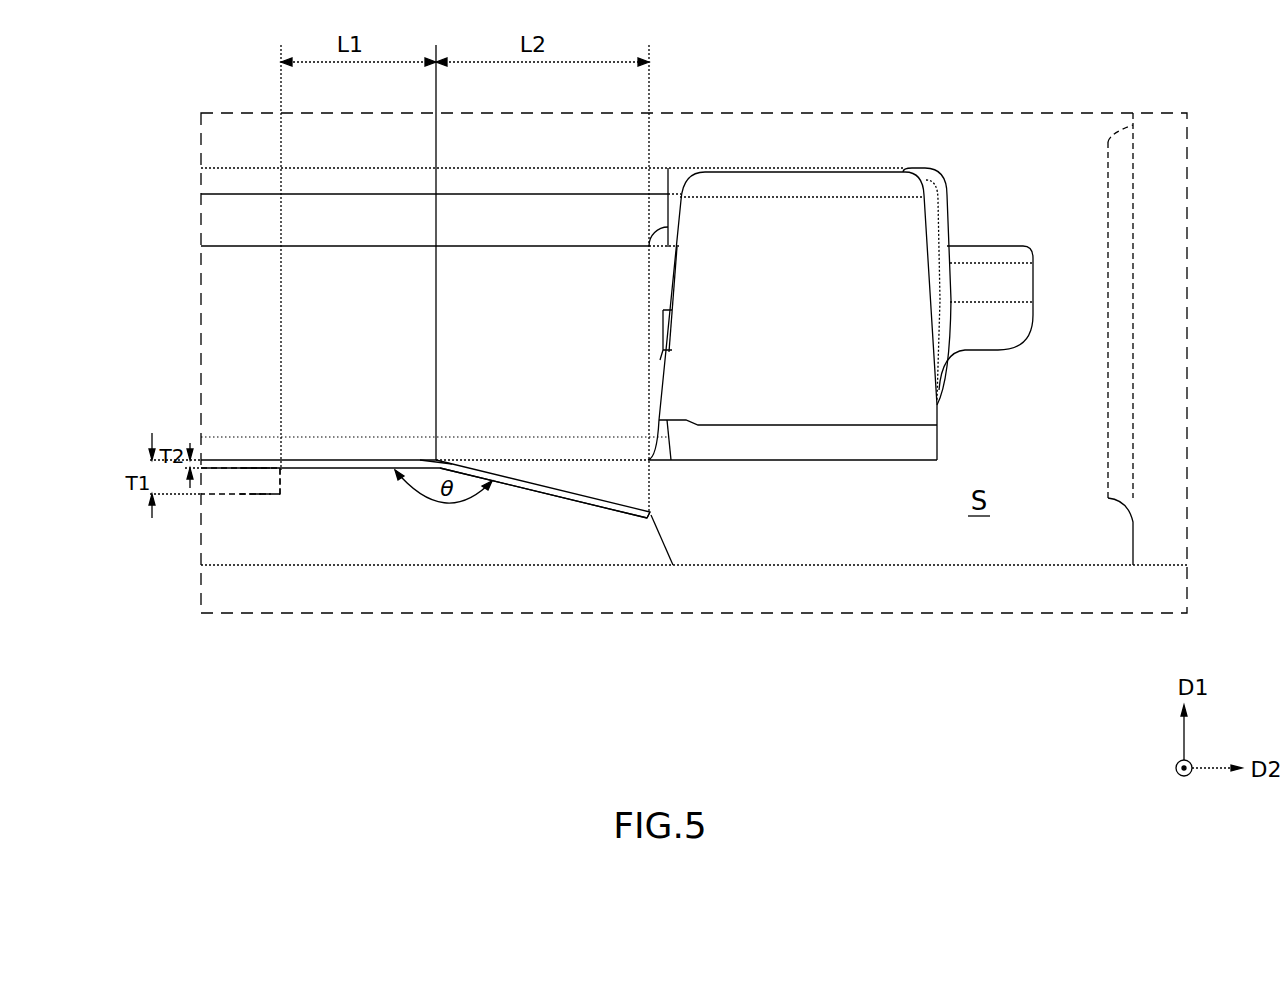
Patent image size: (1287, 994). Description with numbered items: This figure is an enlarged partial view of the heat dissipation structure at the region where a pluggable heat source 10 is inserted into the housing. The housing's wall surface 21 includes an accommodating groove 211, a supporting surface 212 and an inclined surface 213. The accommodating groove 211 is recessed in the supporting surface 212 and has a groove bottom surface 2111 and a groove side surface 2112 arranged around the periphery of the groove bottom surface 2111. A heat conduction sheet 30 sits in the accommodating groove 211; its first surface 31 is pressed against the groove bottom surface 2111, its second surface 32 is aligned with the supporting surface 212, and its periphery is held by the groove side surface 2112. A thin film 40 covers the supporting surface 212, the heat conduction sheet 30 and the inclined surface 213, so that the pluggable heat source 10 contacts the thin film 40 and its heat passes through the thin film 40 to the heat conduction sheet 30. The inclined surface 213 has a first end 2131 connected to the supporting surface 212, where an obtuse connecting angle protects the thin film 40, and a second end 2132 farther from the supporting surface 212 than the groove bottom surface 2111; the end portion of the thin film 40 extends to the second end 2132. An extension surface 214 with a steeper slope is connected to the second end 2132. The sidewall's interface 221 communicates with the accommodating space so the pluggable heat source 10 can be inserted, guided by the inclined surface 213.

The pluggable heat source 10 is at (851, 192).
The wall surface 21 is at (858, 582).
The accommodating groove 211 is at (225, 497).
The groove bottom surface 2111 is at (255, 495).
The groove side surface 2112 is at (282, 483).
The supporting surface 212 is at (362, 470).
The inclined surface 213 is at (533, 493).
The first end 2131 is at (436, 460).
The second end 2132 is at (647, 520).
The extension surface 214 is at (651, 515).
The interface 221 is at (1125, 158).
The heat conduction sheet 30 is at (248, 481).
The first surface 31 is at (268, 493).
The second surface 32 is at (258, 468).
The thin film 40 is at (580, 499).